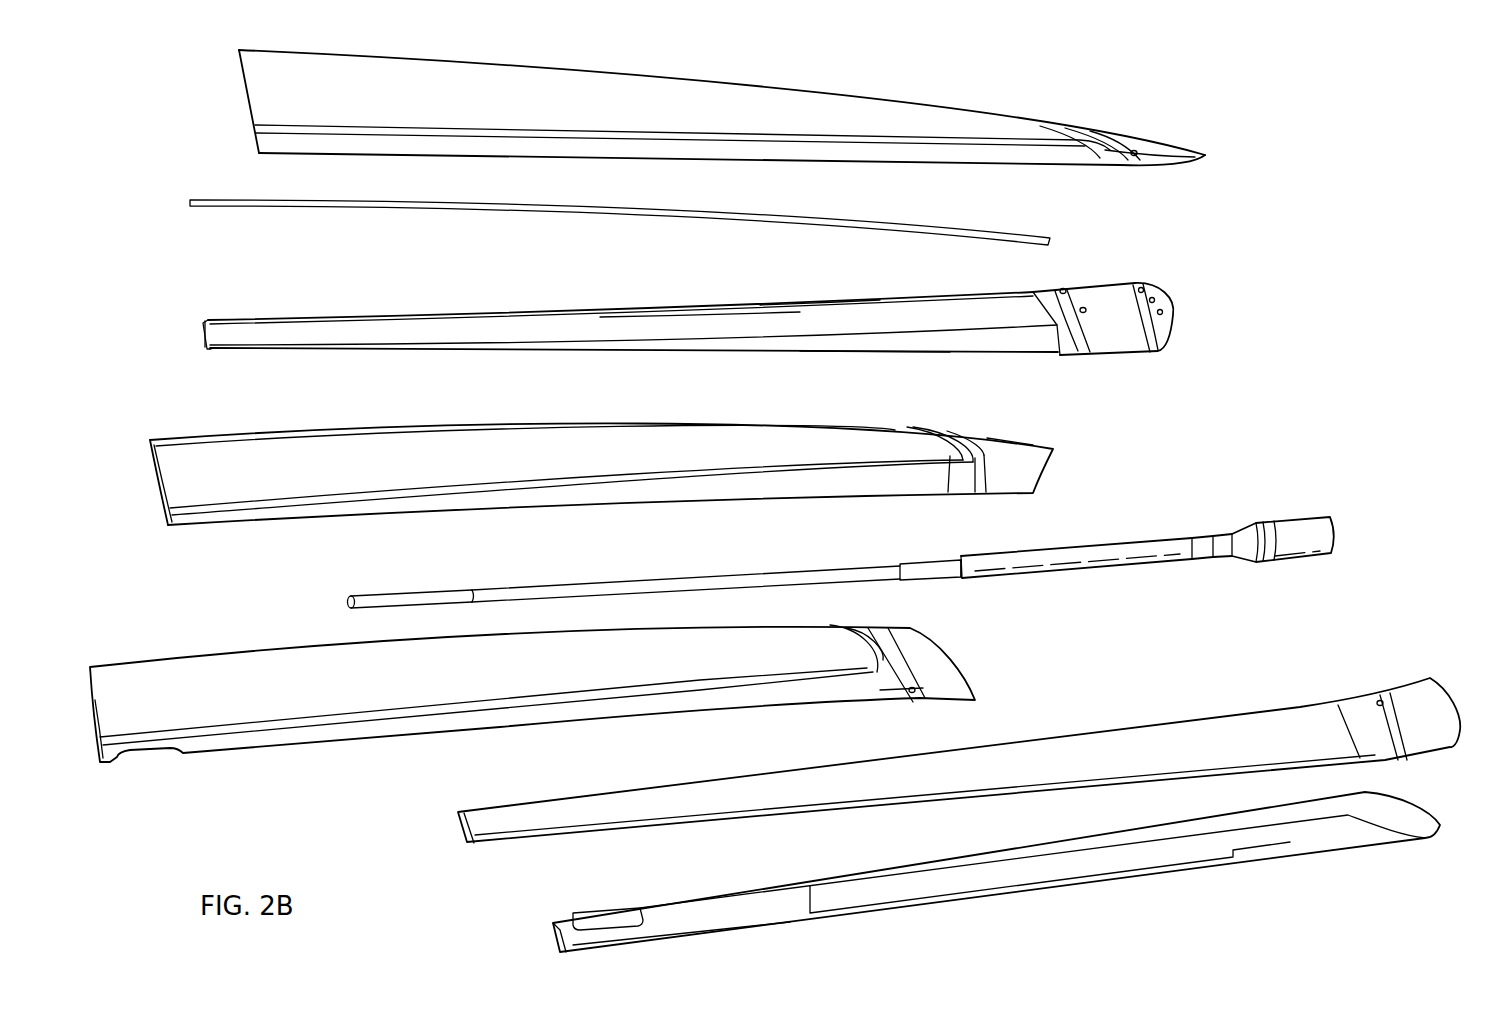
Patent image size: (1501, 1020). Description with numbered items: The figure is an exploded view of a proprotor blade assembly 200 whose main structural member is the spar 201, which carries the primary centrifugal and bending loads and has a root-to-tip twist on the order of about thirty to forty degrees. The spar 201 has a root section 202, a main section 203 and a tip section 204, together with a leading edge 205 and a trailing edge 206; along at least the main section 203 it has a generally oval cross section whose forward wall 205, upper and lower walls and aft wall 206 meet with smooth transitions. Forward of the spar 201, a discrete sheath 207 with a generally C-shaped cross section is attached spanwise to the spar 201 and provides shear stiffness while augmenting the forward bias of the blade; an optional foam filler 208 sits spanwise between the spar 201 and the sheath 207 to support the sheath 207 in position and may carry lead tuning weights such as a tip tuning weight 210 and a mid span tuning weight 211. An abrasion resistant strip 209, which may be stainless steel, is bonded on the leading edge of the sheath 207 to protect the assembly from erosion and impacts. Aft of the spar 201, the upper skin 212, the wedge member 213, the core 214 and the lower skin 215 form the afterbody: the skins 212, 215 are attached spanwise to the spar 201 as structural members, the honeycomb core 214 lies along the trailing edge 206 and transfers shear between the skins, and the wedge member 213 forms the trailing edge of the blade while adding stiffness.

The proprotor blade assembly 200 is at (1303, 283).
The spar 201 is at (477, 325).
The root section 202 is at (1100, 300).
The main section 203 is at (721, 318).
The tip section 204 is at (231, 330).
The leading edge 205 is at (878, 352).
The trailing edge 206 is at (818, 302).
The sheath 207 is at (1053, 748).
The foam filler 208 is at (1081, 540).
The abrasion resistant strip 209 is at (1276, 850).
The tip tuning weight 210 is at (407, 598).
The mid span tuning weight 211 is at (929, 565).
The upper skin 212 is at (956, 108).
The wedge member 213 is at (220, 200).
The core 214 is at (227, 455).
The lower skin 215 is at (241, 652).